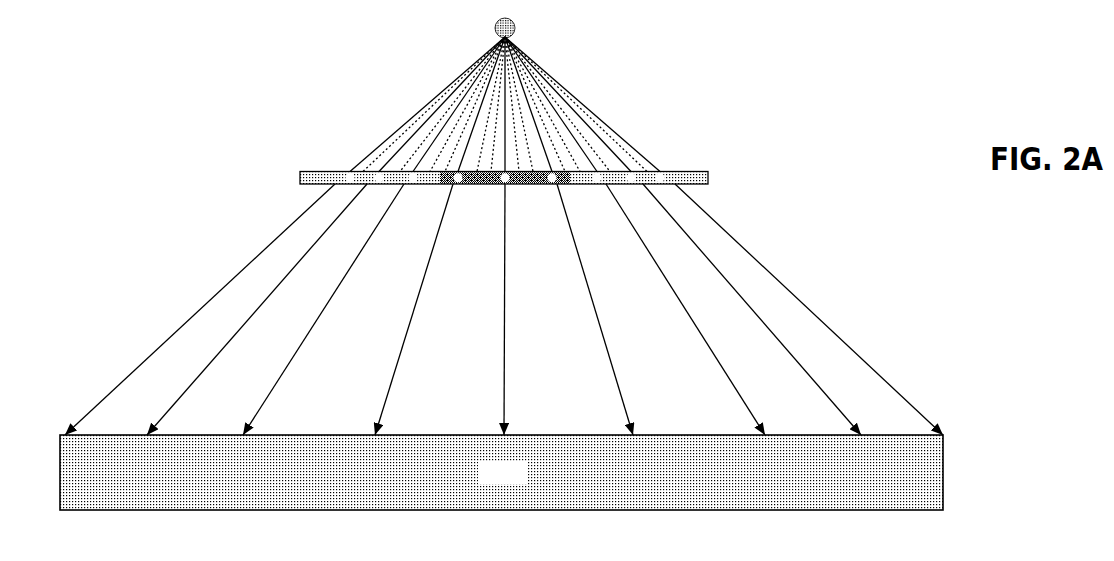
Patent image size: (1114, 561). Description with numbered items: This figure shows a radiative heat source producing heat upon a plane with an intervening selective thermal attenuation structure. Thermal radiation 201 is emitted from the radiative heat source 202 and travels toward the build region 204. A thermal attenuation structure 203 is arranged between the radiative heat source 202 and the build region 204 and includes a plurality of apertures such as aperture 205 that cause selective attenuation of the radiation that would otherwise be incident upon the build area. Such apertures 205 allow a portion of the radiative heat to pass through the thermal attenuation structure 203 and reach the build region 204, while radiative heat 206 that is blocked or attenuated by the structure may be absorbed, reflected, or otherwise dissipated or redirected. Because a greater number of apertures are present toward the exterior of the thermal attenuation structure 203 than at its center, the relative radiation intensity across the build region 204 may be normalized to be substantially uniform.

The thermal radiation 201 is at (643, 152).
The radiative heat source 202 is at (493, 33).
The thermal attenuation structure 203 is at (520, 100).
The build region 204 is at (501, 472).
The aperture 205 is at (665, 173).
The radiative heat 206 is at (527, 171).